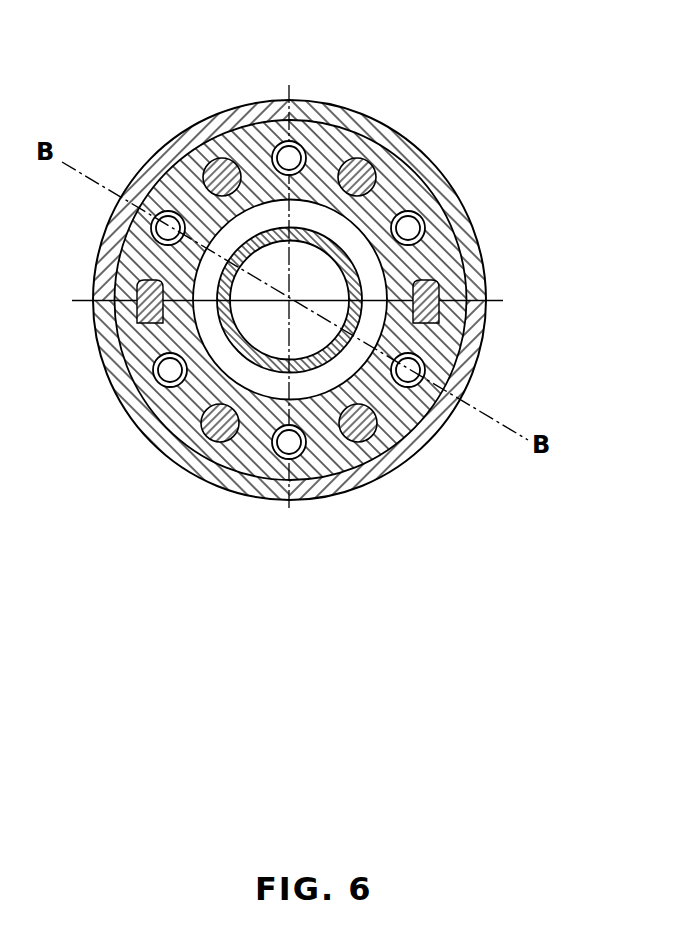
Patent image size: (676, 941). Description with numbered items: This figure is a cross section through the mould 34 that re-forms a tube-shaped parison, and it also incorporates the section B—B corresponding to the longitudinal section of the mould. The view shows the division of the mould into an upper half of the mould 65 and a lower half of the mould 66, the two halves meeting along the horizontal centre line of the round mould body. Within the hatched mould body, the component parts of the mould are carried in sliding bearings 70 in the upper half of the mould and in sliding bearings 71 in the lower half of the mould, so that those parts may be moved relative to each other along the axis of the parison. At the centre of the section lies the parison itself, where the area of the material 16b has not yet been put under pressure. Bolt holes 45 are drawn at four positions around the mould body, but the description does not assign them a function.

The mould 34 is at (525, 223).
The bolt hole 45 is at (175, 232).
The upper half of the mould 65 is at (395, 193).
The lower half of the mould 66 is at (413, 420).
The sliding bearings 70 is at (229, 182).
The sliding bearings 71 is at (232, 443).
The area of the material 16b is at (233, 350).